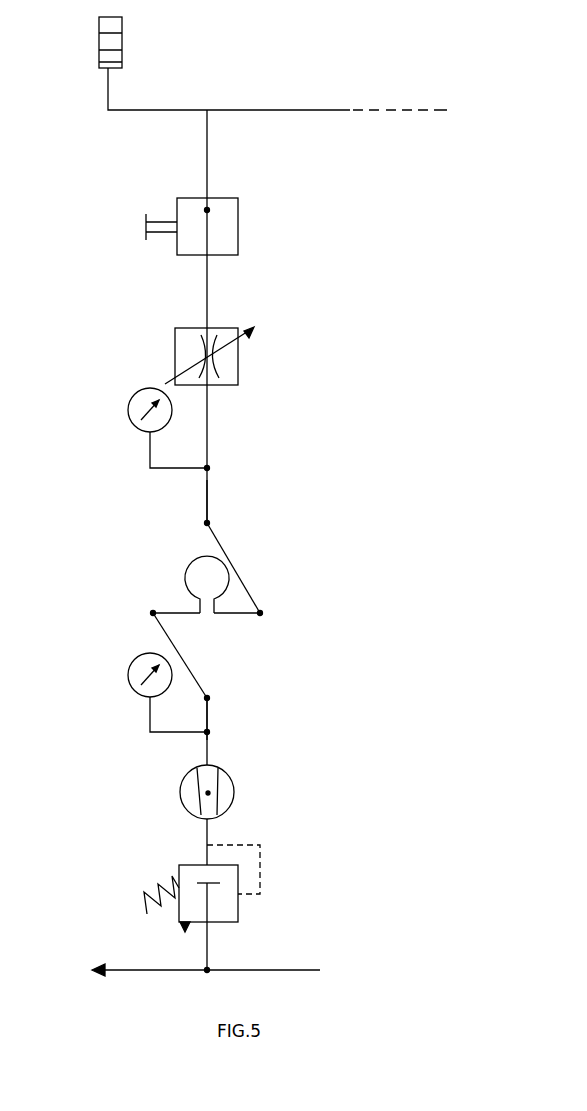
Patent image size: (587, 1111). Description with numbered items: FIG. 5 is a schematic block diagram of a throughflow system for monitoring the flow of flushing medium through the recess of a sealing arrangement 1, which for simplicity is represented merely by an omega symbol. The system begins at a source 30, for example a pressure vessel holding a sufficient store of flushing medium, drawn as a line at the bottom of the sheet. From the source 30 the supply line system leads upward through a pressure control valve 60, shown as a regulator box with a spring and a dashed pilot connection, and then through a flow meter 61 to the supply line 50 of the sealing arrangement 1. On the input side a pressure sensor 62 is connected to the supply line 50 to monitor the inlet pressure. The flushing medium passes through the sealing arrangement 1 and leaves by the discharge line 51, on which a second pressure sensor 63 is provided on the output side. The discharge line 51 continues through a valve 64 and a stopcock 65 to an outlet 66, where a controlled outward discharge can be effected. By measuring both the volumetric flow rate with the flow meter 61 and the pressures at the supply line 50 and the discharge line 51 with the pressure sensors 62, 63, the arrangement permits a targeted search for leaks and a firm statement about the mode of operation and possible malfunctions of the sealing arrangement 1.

The outlet 66 is at (122, 42).
The stopcock 65 is at (238, 224).
The valve 64 is at (238, 358).
The pressure sensor 63 is at (128, 409).
The discharge line 51 is at (209, 497).
The sealing arrangement 1 is at (180, 573).
The pressure sensor 62 is at (128, 677).
The supply line 50 is at (209, 718).
The flow meter 61 is at (234, 790).
The pressure control valve 60 is at (238, 905).
The source 30 is at (92, 969).